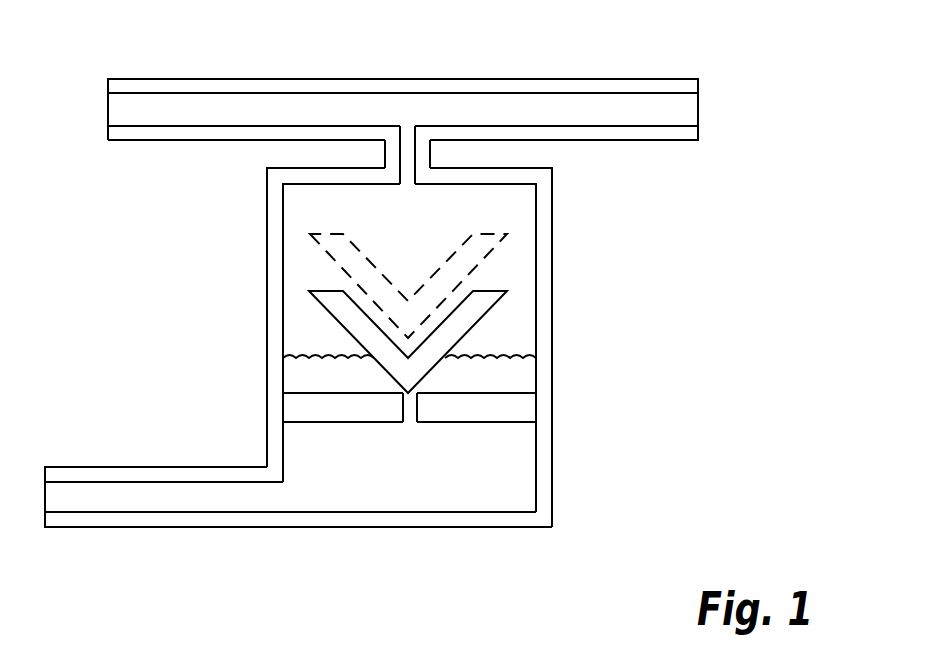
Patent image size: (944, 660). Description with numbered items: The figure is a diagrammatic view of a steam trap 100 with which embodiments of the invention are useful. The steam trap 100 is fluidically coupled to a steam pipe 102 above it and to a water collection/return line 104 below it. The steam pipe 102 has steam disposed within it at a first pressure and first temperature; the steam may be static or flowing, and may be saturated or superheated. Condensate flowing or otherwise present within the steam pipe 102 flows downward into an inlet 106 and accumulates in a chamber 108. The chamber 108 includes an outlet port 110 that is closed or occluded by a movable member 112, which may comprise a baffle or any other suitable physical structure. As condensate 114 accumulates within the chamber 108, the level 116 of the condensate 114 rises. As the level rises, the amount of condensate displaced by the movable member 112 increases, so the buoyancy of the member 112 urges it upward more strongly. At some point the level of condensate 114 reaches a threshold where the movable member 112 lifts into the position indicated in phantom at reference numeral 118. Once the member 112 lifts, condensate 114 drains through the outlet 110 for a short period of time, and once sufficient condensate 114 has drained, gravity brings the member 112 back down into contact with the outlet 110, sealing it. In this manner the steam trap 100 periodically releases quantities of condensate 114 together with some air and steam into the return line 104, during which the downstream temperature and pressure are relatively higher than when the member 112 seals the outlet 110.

The steam trap 100 is at (568, 341).
The steam pipe 102 is at (572, 79).
The water collection/return line 104 is at (158, 527).
The inlet 106 is at (405, 175).
The chamber 108 is at (517, 205).
The outlet port 110 is at (410, 422).
The movable member 112 is at (493, 306).
The condensate 114 is at (298, 378).
The level 116 is at (300, 361).
The lifted position of movable member 118 is at (482, 248).